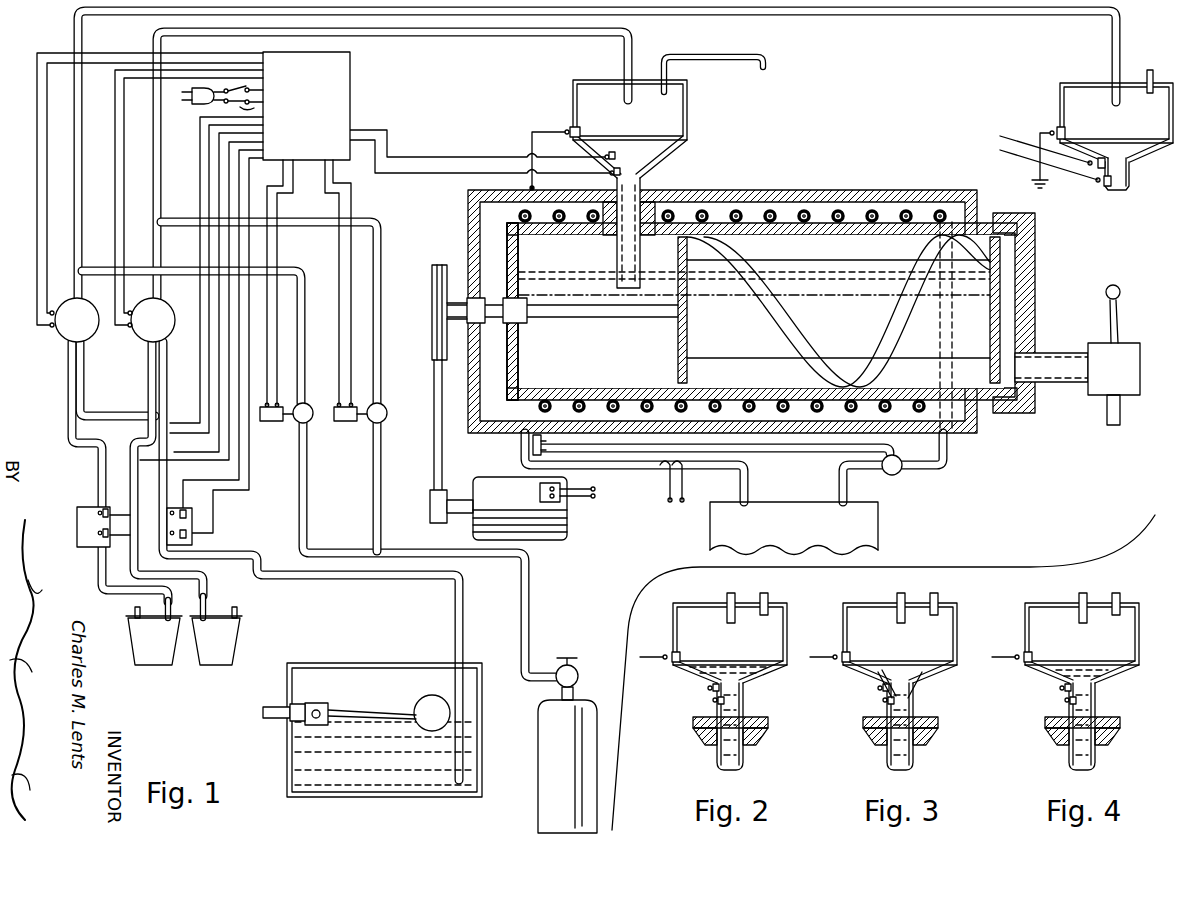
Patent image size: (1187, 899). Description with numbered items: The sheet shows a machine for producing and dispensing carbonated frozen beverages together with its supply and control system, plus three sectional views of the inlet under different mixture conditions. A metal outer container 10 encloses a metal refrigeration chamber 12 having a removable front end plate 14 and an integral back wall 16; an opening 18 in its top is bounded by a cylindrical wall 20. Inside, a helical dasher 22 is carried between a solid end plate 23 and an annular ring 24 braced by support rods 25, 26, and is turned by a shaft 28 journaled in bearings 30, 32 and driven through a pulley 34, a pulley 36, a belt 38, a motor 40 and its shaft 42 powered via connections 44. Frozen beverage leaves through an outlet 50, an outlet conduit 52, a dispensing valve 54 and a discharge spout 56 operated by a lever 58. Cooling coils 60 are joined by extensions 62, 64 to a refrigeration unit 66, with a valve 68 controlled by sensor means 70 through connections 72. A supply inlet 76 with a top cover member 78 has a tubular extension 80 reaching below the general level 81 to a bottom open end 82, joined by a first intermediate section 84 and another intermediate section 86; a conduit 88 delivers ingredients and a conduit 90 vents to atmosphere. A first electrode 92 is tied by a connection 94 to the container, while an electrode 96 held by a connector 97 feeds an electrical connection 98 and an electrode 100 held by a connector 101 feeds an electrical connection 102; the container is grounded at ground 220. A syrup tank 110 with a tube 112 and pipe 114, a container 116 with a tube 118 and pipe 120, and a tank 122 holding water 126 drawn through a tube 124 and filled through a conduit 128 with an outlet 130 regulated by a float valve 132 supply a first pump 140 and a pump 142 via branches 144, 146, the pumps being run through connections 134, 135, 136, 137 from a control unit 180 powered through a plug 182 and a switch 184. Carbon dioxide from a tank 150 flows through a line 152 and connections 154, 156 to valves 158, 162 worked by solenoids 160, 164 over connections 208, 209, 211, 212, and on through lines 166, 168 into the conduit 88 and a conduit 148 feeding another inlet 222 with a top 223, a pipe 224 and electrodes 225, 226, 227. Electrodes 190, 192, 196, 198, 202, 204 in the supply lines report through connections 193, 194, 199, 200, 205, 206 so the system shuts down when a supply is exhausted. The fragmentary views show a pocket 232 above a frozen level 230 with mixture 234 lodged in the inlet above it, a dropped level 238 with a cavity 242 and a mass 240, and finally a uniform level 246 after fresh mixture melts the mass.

In FIG. 1, the outer container 10 is at (795, 196).
In FIG. 2, the outer container 10 is at (748, 716).
In FIG. 3, the outer container 10 is at (911, 716).
In FIG. 4, the outer container 10 is at (1093, 716).
In FIG. 1, the refrigeration chamber 12 is at (812, 238).
In FIG. 1, the front end plate 14 is at (1036, 252).
In FIG. 1, the back wall 16 is at (506, 254).
In FIG. 1, the opening 18 is at (610, 236).
In FIG. 1, the cylindrical wall 20 is at (604, 236).
In FIG. 1, the helical dasher 22 is at (790, 320).
In FIG. 1, the solid end plate 23 is at (688, 333).
In FIG. 1, the annular ring 24 is at (989, 340).
In FIG. 1, the support rod 25 is at (855, 258).
In FIG. 1, the support rod 26 is at (834, 357).
In FIG. 1, the shaft 28 is at (616, 318).
In FIG. 1, the bearing 30 is at (503, 325).
In FIG. 1, the bearing 32 is at (484, 297).
In FIG. 1, the pulley 34 is at (432, 309).
In FIG. 1, the pulley 36 is at (430, 507).
In FIG. 1, the belt 38 is at (432, 452).
In FIG. 1, the motor 40 is at (508, 477).
In FIG. 1, the shaft 42 is at (466, 499).
In FIG. 1, the connections 44 is at (572, 500).
In FIG. 1, the outlet 50 is at (1022, 366).
In FIG. 1, the outlet conduit 52 is at (1045, 352).
In FIG. 1, the dispensing valve 54 is at (1141, 370).
In FIG. 1, the discharge spout 56 is at (1121, 409).
In FIG. 1, the lever 58 is at (1120, 298).
In FIG. 1, the cooling coils 60 is at (782, 210).
In FIG. 1, the extension 62 is at (654, 470).
In FIG. 1, the extension 64 is at (904, 472).
In FIG. 1, the refrigeration unit 66 is at (879, 522).
In FIG. 1, the valve 68 is at (868, 472).
In FIG. 1, the sensor means 70 is at (532, 441).
In FIG. 1, the connections 72 is at (760, 452).
In FIG. 1, the supply inlet 76 is at (688, 110).
In FIG. 2, the supply inlet 76 is at (788, 632).
In FIG. 3, the supply inlet 76 is at (912, 643).
In FIG. 4, the supply inlet 76 is at (1094, 643).
In FIG. 1, the top cover member 78 is at (600, 80).
In FIG. 1, the tubular extension 80 is at (641, 255).
In FIG. 2, the tubular extension 80 is at (744, 755).
In FIG. 3, the tubular extension 80 is at (914, 726).
In FIG. 4, the tubular extension 80 is at (1096, 726).
In FIG. 1, the general level 81 is at (566, 268).
In FIG. 1, the bottom open end 82 is at (624, 305).
In FIG. 1, the first intermediate section 84 is at (672, 154).
In FIG. 1, the intermediate section 86 is at (650, 160).
In FIG. 1, the conduit 88 is at (162, 154).
In FIG. 2, the conduit 88 is at (731, 593).
In FIG. 3, the conduit 88 is at (911, 597).
In FIG. 4, the conduit 88 is at (1093, 597).
In FIG. 1, the conduit 90 is at (690, 54).
In FIG. 2, the conduit 90 is at (766, 593).
In FIG. 3, the conduit 90 is at (945, 593).
In FIG. 4, the conduit 90 is at (1127, 593).
In FIG. 2, the first electrode 92 is at (668, 655).
In FIG. 3, the first electrode 92 is at (828, 646).
In FIG. 4, the first electrode 92 is at (1010, 646).
In FIG. 1, the connection 94 is at (545, 130).
In FIG. 1, the electrode 96 is at (618, 152).
In FIG. 2, the electrode 96 is at (708, 688).
In FIG. 3, the electrode 96 is at (859, 685).
In FIG. 4, the electrode 96 is at (1041, 685).
In FIG. 1, the connector 97 is at (605, 160).
In FIG. 1, the electrical connection 98 is at (450, 162).
In FIG. 1, the electrode 100 is at (622, 168).
In FIG. 2, the electrode 100 is at (713, 702).
In FIG. 3, the electrode 100 is at (861, 700).
In FIG. 4, the electrode 100 is at (1043, 700).
In FIG. 1, the connector 101 is at (610, 176).
In FIG. 1, the electrical connection 102 is at (450, 178).
In FIG. 1, the syrup tank 110 is at (240, 635).
In FIG. 1, the tube 112 is at (204, 598).
In FIG. 1, the pipe 114 is at (238, 612).
In FIG. 1, the container 116 is at (130, 648).
In FIG. 1, the tube 118 is at (171, 600).
In FIG. 1, the pipe 120 is at (133, 612).
In FIG. 1, the tank 122 is at (340, 664).
In FIG. 1, the tube 124 is at (462, 645).
In FIG. 1, the water 126 is at (400, 762).
In FIG. 1, the conduit 128 is at (275, 700).
In FIG. 1, the outlet 130 is at (316, 703).
In FIG. 1, the float valve 132 is at (422, 696).
In FIG. 1, the electrical connection 134 is at (126, 162).
In FIG. 1, the electrical connection 135 is at (114, 154).
In FIG. 1, the connection 136 is at (74, 120).
In FIG. 1, the connection 137 is at (38, 118).
In FIG. 1, the first pump 140 is at (136, 340).
In FIG. 1, the pump 142 is at (58, 340).
In FIG. 1, the branch 144 is at (167, 377).
In FIG. 1, the branch 146 is at (100, 407).
In FIG. 1, the conduit 148 is at (92, 126).
In FIG. 1, the tank 150 is at (537, 744).
In FIG. 1, the line 152 is at (526, 610).
In FIG. 1, the connection 154 is at (379, 462).
In FIG. 1, the connection 156 is at (306, 483).
In FIG. 1, the valve 158 is at (388, 405).
In FIG. 1, the solenoid 160 is at (336, 405).
In FIG. 1, the valve 162 is at (308, 424).
In FIG. 1, the solenoid 164 is at (268, 424).
In FIG. 1, the line 166 is at (380, 264).
In FIG. 1, the line 168 is at (305, 329).
In FIG. 1, the control unit 180 is at (352, 86).
In FIG. 1, the plug 182 is at (192, 105).
In FIG. 1, the switch 184 is at (258, 108).
In FIG. 1, the electrode 190 is at (192, 536).
In FIG. 1, the electrode 192 is at (192, 518).
In FIG. 1, the electrical connection 193 is at (241, 478).
In FIG. 1, the electrical connection 194 is at (215, 493).
In FIG. 1, the electrode 196 is at (160, 504).
In FIG. 1, the electrode 198 is at (138, 540).
In FIG. 1, the electrical connection 199 is at (200, 456).
In FIG. 1, the electrical connection 200 is at (208, 462).
In FIG. 1, the electrode 202 is at (100, 505).
In FIG. 1, the electrode 204 is at (100, 546).
In FIG. 1, the electrical connection 205 is at (178, 434).
In FIG. 1, the electrical connection 206 is at (175, 425).
In FIG. 1, the electrical connection 208 is at (334, 176).
In FIG. 1, the electrical connection 209 is at (338, 209).
In FIG. 1, the electrical connection 211 is at (283, 176).
In FIG. 1, the electrical connection 212 is at (280, 200).
In FIG. 1, the ground 220 is at (1042, 187).
In FIG. 1, the inlet 222 is at (1058, 100).
In FIG. 1, the top 223 is at (1158, 82).
In FIG. 1, the pipe 224 is at (1122, 70).
In FIG. 1, the electrode 225 is at (1065, 131).
In FIG. 1, the electrode 226 is at (1104, 157).
In FIG. 1, the electrode 227 is at (1115, 177).
In FIG. 2, the level 230 is at (722, 740).
In FIG. 2, the pocket 232 is at (738, 702).
In FIG. 2, the liquid level 234 is at (712, 666).
In FIG. 3, the level 238 is at (931, 685).
In FIG. 3, the mass 240 is at (876, 668).
In FIG. 3, the cavity 242 is at (914, 668).
In FIG. 4, the uniform level 246 is at (1082, 657).